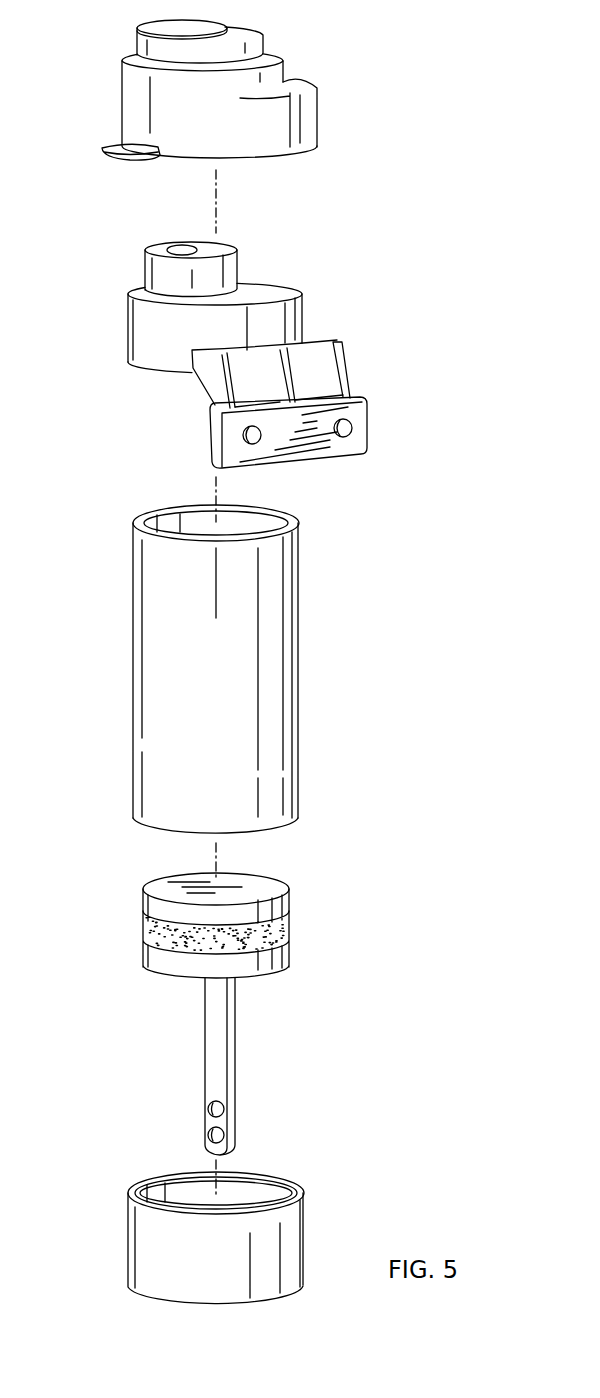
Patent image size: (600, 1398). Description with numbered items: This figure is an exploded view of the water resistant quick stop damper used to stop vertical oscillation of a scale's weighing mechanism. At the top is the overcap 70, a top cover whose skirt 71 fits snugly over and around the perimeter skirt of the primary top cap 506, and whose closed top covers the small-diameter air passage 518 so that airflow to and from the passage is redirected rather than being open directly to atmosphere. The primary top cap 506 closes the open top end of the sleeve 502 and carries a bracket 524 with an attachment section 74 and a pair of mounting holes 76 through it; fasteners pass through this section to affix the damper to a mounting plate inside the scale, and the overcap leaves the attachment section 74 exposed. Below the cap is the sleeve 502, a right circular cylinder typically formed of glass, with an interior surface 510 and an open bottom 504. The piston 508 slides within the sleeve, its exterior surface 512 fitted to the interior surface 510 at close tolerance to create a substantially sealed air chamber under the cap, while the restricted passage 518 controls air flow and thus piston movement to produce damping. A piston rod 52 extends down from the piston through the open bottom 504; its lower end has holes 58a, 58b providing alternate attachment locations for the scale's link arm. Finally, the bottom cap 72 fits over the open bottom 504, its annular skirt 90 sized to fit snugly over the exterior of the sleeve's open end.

The overcap 70 is at (257, 90).
The skirt 71 is at (303, 135).
The air passage 518 is at (180, 246).
The primary top cap 506 is at (249, 286).
The bracket 524 is at (346, 369).
The mounting holes 76 is at (243, 435).
The attachment section 74 is at (294, 449).
The interior surface 510 is at (228, 522).
The sleeve 502 is at (261, 671).
The open bottom 504 is at (272, 830).
The exterior surface 512 is at (157, 910).
The piston 508 is at (226, 925).
The piston rod 52 is at (207, 1066).
The upper hole 58a is at (209, 1103).
The lower hole 58b is at (208, 1130).
The bottom cap 72 is at (226, 1238).
The annular skirt 90 is at (145, 1240).